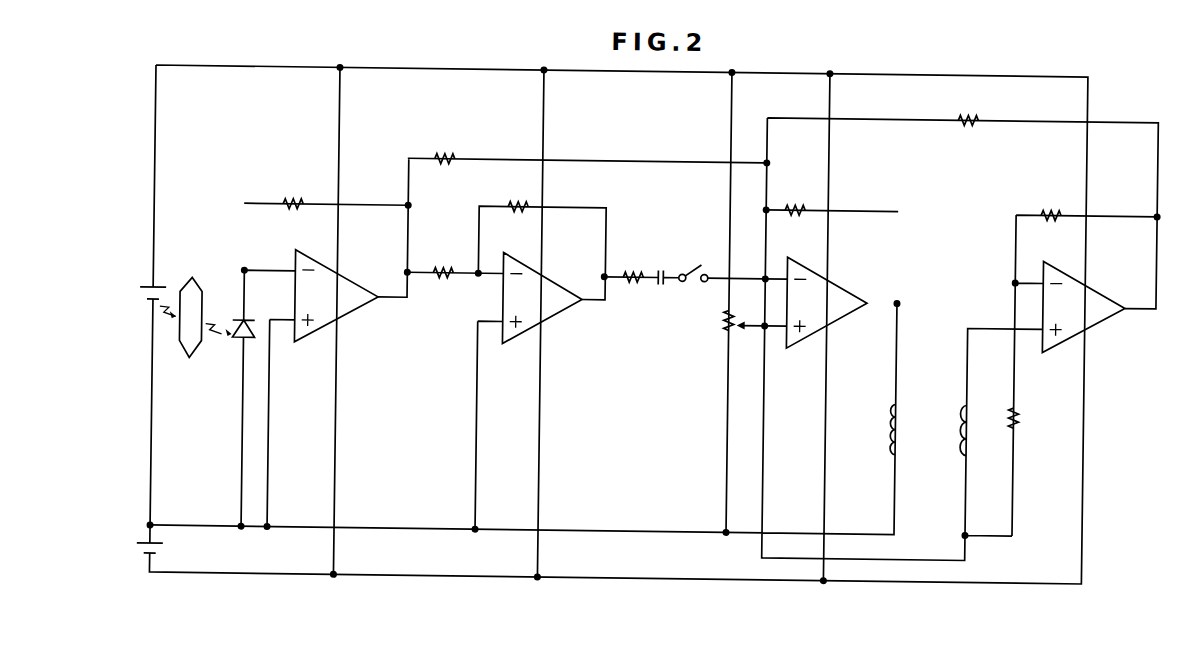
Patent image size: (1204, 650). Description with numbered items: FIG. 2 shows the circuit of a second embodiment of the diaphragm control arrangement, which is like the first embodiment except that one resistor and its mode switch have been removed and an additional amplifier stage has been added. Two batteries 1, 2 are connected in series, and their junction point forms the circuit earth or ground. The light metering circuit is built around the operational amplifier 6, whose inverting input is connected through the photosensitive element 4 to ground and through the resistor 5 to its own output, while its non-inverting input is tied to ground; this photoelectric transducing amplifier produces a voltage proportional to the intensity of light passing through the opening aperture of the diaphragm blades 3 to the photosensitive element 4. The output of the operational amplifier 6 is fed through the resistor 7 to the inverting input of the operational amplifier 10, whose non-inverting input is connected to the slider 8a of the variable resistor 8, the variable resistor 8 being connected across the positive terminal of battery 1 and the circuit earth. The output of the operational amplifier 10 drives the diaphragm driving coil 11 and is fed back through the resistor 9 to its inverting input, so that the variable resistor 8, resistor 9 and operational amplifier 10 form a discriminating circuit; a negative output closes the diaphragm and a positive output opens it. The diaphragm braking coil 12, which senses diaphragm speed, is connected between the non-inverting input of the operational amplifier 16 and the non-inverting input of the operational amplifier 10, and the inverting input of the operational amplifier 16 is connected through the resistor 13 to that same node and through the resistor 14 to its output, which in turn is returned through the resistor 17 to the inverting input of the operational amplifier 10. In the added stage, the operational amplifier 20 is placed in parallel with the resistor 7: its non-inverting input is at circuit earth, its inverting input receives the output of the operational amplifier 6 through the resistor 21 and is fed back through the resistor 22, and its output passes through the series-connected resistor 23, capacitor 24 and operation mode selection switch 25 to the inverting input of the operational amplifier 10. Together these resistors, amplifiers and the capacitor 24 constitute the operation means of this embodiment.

The battery 1 is at (167, 290).
The battery 2 is at (166, 545).
The diaphragm blades 3 is at (198, 356).
The photosensitive element 4 is at (239, 318).
The resistor 5 is at (297, 196).
The operational amplifier 6 is at (350, 314).
The resistor 7 is at (447, 150).
The variable resistor 8 is at (727, 320).
The slider 8a is at (768, 316).
The resistor 9 is at (803, 195).
The operational amplifier 10 is at (806, 337).
The diaphragm driving coil 11 is at (891, 411).
The diaphragm braking coil 12 is at (962, 414).
The resistor 13 is at (1025, 411).
The resistor 14 is at (1050, 193).
The operational amplifier 16 is at (1104, 312).
The resistor 17 is at (974, 120).
The operational amplifier 20 is at (558, 313).
The resistor 21 is at (449, 279).
The resistor 22 is at (517, 200).
The resistor 23 is at (635, 264).
The capacitor 24 is at (662, 258).
The switch 25 is at (694, 258).